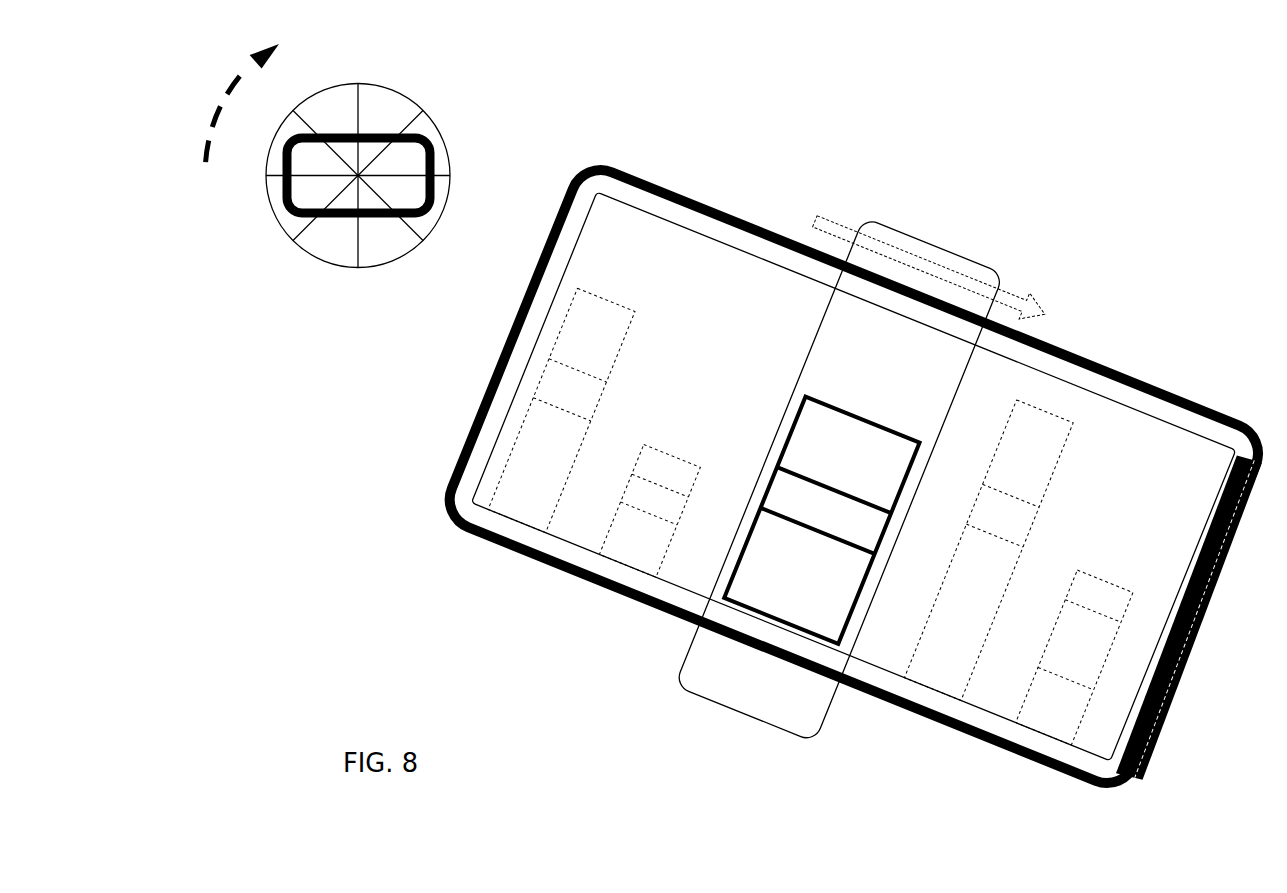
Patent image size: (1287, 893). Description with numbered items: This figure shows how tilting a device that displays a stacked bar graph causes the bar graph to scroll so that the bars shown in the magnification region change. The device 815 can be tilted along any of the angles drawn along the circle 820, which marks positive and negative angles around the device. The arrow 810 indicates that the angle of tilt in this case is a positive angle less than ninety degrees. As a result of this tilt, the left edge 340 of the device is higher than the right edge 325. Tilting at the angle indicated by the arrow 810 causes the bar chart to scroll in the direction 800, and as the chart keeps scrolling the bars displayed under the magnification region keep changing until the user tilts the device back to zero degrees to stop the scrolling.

The left edge 340 is at (471, 418).
The direction of scrolling 800 is at (932, 262).
The right edge 325 is at (1177, 706).
The circle 820 is at (318, 266).
The device 815 is at (436, 150).
The arrow 810 is at (243, 75).